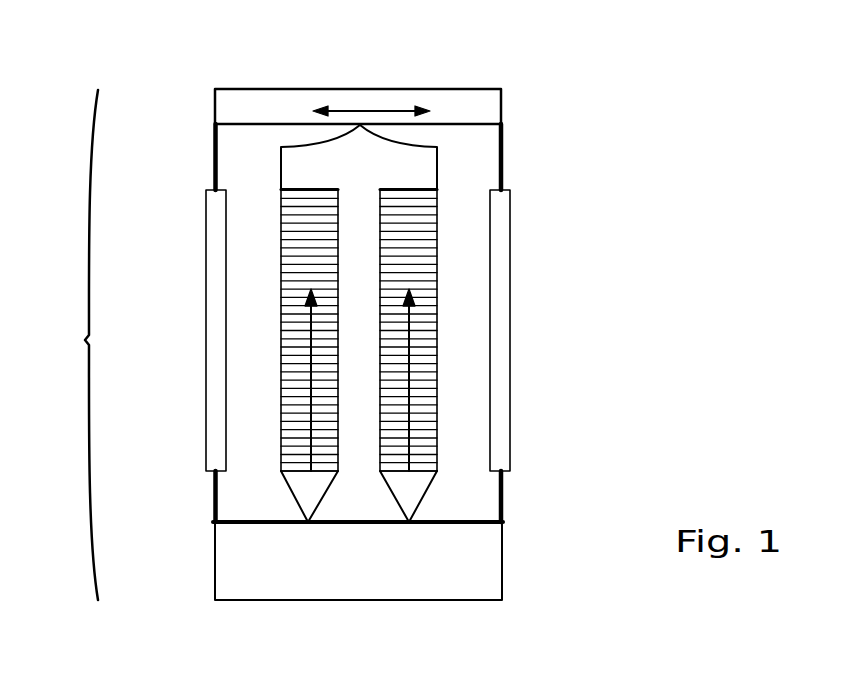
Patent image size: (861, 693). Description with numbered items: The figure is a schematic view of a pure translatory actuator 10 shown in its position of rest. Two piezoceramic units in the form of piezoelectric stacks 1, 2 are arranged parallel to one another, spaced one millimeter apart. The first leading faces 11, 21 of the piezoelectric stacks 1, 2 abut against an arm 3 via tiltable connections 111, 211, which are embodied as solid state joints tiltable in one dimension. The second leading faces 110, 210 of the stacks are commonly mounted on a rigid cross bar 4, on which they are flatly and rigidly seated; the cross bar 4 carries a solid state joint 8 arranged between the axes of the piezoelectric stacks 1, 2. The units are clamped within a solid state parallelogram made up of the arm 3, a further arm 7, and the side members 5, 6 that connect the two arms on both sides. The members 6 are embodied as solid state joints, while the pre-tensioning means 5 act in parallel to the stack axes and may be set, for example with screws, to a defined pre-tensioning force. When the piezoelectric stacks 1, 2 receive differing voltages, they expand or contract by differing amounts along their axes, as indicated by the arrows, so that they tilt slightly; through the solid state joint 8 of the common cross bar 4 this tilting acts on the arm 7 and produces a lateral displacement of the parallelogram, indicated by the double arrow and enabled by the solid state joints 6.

The actuator 10 is at (305, 338).
The further arm 7 is at (280, 107).
The solid state joint 8 is at (359, 127).
The side members 6 is at (213, 148).
The side members 5 is at (216, 308).
The rigid cross bar 4 is at (387, 167).
The second leading face 110 is at (313, 188).
The second leading face 210 is at (408, 190).
The piezoelectric stack 1 is at (310, 266).
The piezoelectric stack 2 is at (417, 276).
The first leading face 11 is at (307, 473).
The tiltable connection 111 is at (310, 497).
The first leading face 21 is at (415, 475).
The tiltable connection 211 is at (408, 497).
The arm 3 is at (353, 573).